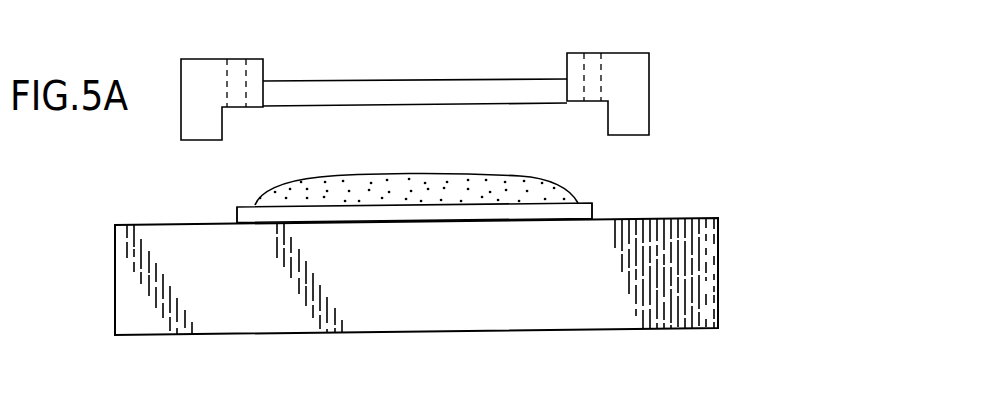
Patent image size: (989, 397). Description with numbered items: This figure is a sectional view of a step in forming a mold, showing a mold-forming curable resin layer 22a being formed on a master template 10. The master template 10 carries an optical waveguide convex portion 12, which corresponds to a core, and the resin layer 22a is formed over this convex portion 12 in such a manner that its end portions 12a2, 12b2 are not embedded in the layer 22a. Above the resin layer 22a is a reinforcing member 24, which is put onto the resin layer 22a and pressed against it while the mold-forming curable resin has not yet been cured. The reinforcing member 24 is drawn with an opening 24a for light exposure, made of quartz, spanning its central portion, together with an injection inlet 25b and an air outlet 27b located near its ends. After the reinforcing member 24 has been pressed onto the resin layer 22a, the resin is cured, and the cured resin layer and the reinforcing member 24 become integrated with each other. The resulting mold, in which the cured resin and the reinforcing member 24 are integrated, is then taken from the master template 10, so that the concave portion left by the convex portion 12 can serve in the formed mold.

The master template 10 is at (527, 305).
The optical waveguide convex portion 12 is at (488, 212).
The end portion of the optical waveguide convex portion 12a2 is at (593, 217).
The end portion of the optical waveguide convex portion 12b2 is at (237, 218).
The mold-forming curable resin layer 22a is at (532, 183).
The reinforcing member 24 is at (442, 70).
The opening for light exposure 24a is at (461, 90).
The injection inlet 25b is at (592, 53).
The air outlet 27b is at (239, 58).